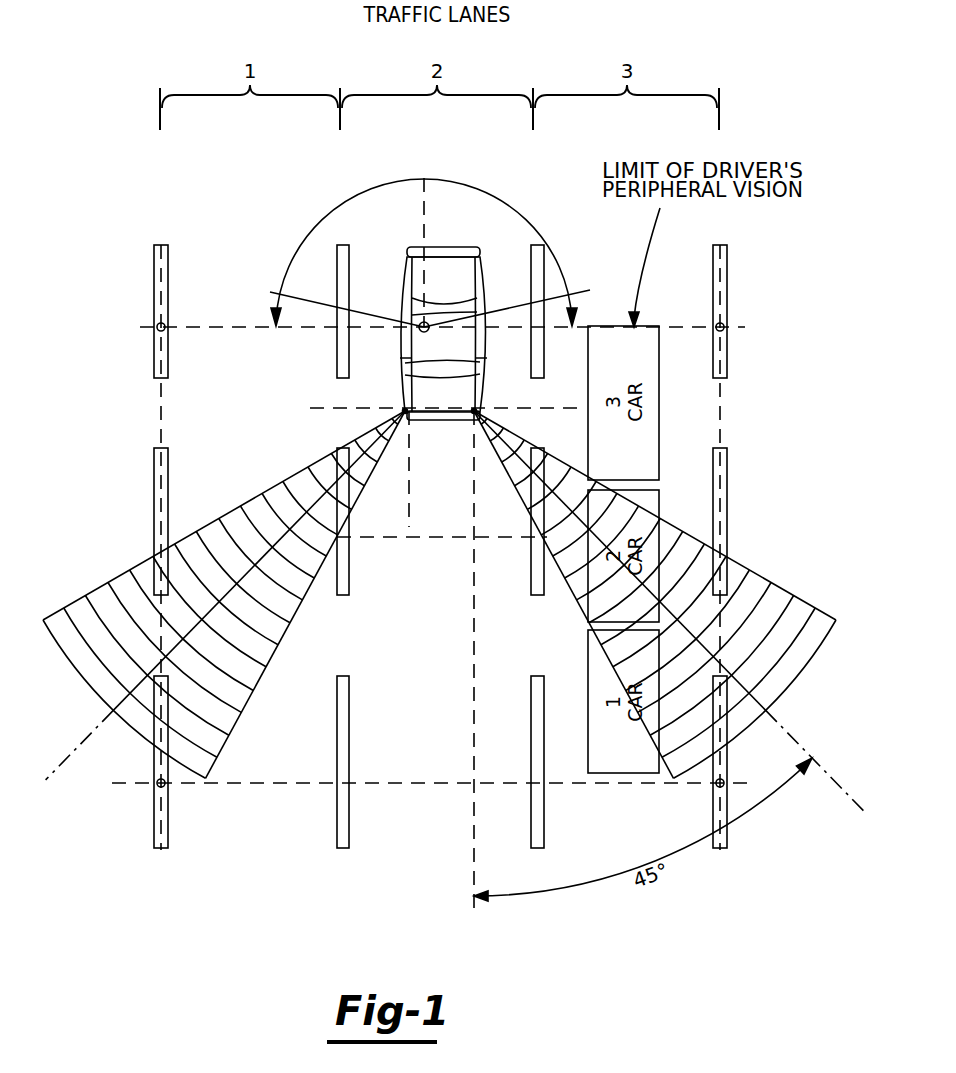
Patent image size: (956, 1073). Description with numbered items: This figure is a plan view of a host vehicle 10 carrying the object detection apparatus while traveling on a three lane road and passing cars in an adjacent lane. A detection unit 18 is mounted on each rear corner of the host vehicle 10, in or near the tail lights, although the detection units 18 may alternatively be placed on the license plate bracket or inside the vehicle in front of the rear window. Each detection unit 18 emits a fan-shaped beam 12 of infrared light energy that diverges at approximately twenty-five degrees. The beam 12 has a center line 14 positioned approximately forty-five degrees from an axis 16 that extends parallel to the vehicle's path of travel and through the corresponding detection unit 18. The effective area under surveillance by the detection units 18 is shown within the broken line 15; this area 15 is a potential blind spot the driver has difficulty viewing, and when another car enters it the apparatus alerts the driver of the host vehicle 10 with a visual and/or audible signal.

The host vehicle 10 is at (458, 279).
The fan-shaped beam 12 is at (780, 613).
The center line 14 is at (848, 792).
The area under surveillance 15 is at (263, 330).
The axis 16 is at (473, 847).
The detection unit 18 is at (403, 411).